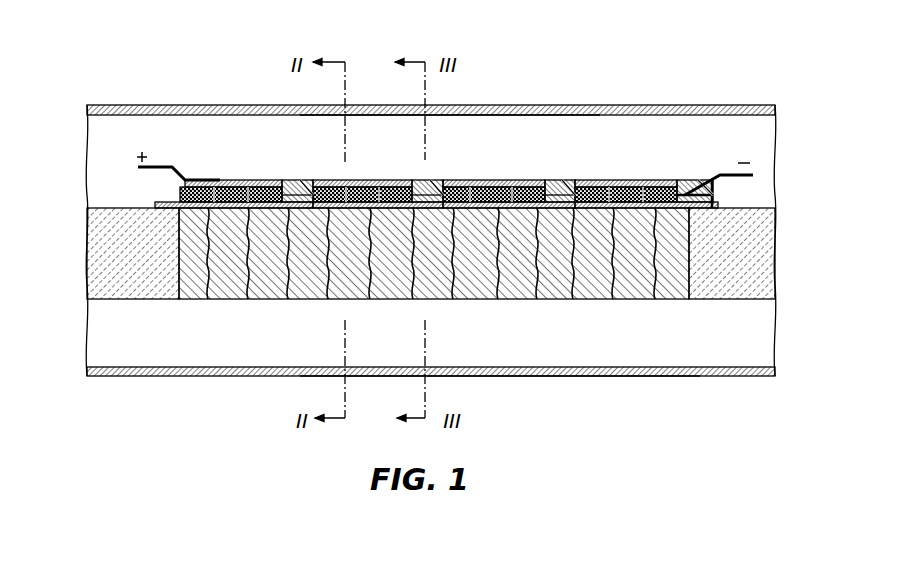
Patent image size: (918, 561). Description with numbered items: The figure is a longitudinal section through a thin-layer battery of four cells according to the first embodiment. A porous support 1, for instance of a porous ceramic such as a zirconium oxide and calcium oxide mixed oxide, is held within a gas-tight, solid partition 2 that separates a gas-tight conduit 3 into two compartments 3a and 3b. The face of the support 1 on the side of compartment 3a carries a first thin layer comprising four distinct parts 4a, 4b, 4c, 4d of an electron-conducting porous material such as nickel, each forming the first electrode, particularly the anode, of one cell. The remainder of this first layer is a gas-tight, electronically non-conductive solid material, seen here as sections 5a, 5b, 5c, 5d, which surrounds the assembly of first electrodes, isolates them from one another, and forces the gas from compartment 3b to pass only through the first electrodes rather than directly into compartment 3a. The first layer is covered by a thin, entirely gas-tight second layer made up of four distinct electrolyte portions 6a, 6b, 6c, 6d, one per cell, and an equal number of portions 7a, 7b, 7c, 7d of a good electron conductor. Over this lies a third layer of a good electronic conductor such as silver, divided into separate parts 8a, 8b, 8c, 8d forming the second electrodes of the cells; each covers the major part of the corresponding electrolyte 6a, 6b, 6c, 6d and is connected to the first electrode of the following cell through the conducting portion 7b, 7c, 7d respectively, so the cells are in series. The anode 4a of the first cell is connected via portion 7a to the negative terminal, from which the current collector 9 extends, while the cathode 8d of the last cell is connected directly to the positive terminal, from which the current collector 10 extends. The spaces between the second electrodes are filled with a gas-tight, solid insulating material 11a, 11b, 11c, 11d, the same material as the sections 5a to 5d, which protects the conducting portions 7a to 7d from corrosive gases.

The porous support 1 is at (402, 291).
The gas-tight solid partition 2 is at (129, 292).
The gas-tight conduit 3 is at (525, 106).
The conduit compartment 3a is at (565, 121).
The conduit compartment 3b is at (570, 357).
The first electrode part 4a is at (600, 181).
The first electrode part 4b is at (480, 181).
The first electrode part 4c is at (355, 181).
The first electrode part 4d is at (232, 181).
The gas-tight non-conductive section of first layer 5a is at (708, 181).
The gas-tight non-conductive section of first layer 5b is at (580, 181).
The gas-tight non-conductive section of first layer 5c is at (452, 181).
The gas-tight non-conductive section of first layer 5d is at (325, 181).
The electrolyte portion 6a is at (640, 181).
The electrolyte portion 6b is at (513, 181).
The electrolyte portion 6c is at (392, 181).
The electrolyte portion 6d is at (262, 181).
The electron conducting portion of second layer 7a is at (683, 181).
The electron conducting portion of second layer 7b is at (552, 181).
The electron conducting portion of second layer 7c is at (428, 181).
The electron conducting portion of second layer 7d is at (300, 181).
The second electrode 8a is at (618, 181).
The second electrode 8b is at (493, 181).
The second electrode 8c is at (372, 181).
The second electrode 8d is at (242, 181).
The current collector 9 is at (748, 180).
The current collector 10 is at (141, 172).
The gas-tight insulating filler 11a is at (667, 181).
The gas-tight insulating filler 11b is at (540, 181).
The gas-tight insulating filler 11c is at (415, 181).
The gas-tight insulating filler 11d is at (290, 181).